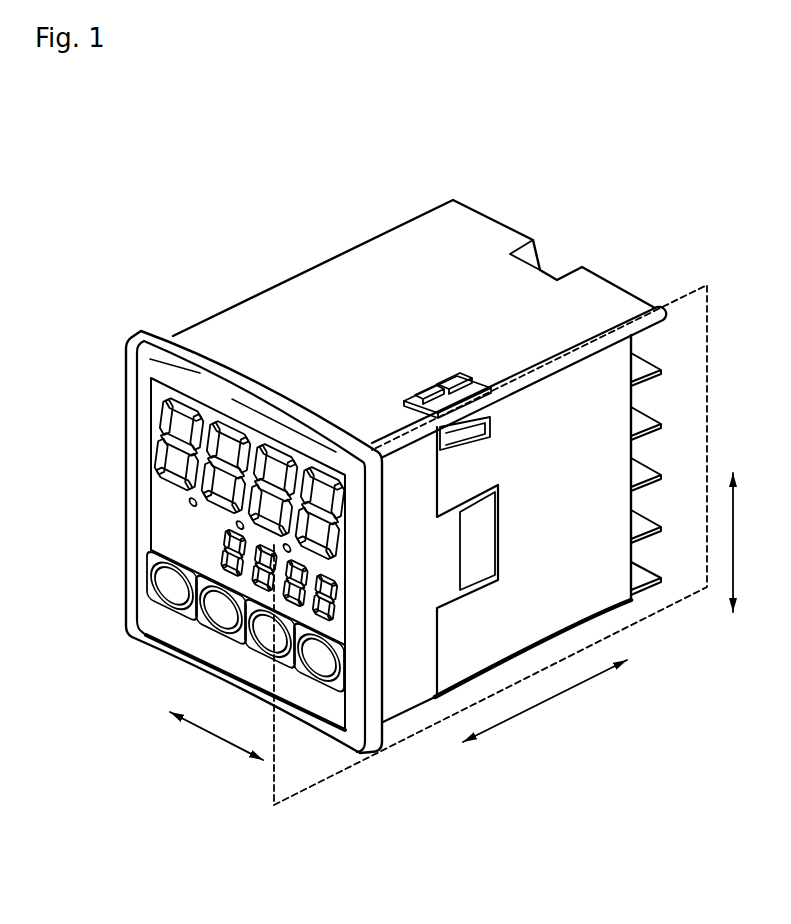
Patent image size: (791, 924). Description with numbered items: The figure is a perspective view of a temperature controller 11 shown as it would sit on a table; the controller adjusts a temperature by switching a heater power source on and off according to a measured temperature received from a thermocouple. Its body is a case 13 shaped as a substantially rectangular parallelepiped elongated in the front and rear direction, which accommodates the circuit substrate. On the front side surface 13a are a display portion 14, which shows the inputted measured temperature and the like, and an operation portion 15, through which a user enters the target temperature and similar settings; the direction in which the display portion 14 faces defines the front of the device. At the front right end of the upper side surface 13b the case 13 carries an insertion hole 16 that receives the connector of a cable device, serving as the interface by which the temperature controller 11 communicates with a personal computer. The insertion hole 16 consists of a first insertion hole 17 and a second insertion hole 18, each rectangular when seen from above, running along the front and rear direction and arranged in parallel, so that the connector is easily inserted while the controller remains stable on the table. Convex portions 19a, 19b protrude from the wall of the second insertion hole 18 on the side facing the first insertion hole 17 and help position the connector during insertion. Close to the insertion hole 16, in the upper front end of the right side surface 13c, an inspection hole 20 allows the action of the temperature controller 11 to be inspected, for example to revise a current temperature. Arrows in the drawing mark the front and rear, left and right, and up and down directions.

The temperature controller 11 is at (562, 198).
The case 13 is at (606, 268).
The front side surface 13a is at (162, 623).
The upper side surface 13b is at (218, 333).
The right side surface 13c is at (601, 574).
The display portion 14 is at (151, 513).
The operation portion 15 is at (152, 575).
The insertion hole 16 is at (280, 217).
The first insertion hole 17 is at (422, 394).
The second insertion hole 18 is at (436, 384).
The convex portion 19a is at (445, 378).
The convex portion 19b is at (404, 402).
The inspection hole 20 is at (462, 438).